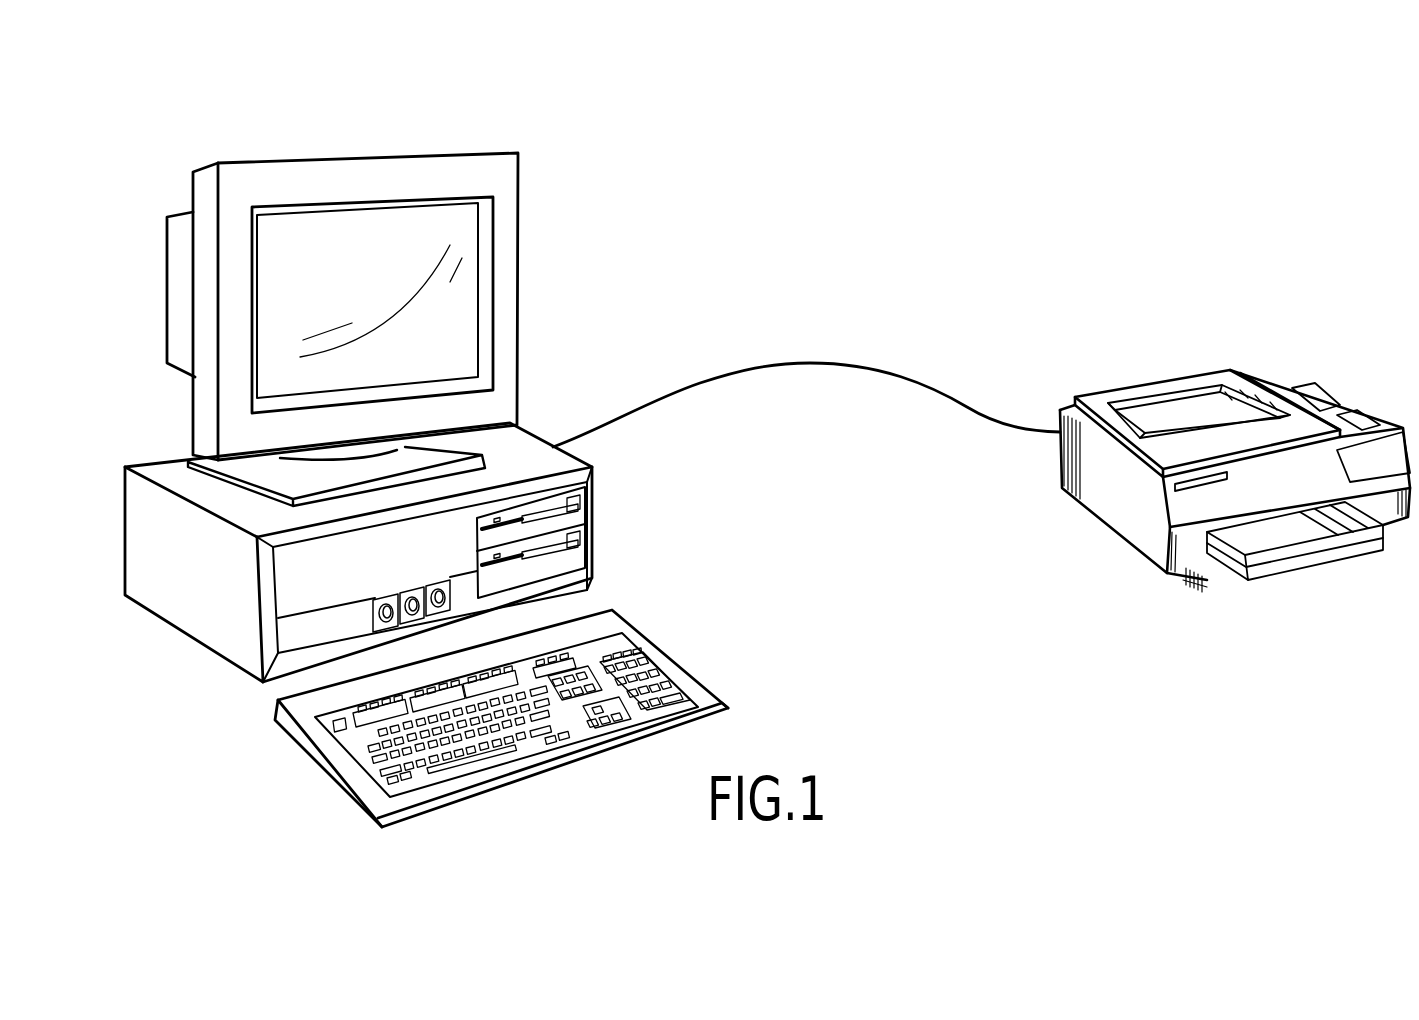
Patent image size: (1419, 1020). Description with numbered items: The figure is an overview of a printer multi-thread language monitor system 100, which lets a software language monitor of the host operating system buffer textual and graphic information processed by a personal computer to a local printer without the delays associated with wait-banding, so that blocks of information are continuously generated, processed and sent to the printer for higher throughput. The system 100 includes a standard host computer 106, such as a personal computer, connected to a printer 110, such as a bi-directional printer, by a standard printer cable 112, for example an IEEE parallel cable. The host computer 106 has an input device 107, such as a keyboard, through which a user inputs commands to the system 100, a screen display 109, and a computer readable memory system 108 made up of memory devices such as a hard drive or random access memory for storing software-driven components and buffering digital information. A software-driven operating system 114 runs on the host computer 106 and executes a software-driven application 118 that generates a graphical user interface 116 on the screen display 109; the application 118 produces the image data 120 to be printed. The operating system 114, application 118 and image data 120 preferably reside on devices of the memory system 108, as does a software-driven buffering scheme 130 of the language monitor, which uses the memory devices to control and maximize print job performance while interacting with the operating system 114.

The printer multi-thread language monitor system 100 is at (973, 219).
The host computer 106 is at (147, 465).
The input device 107 is at (298, 716).
The computer readable memory system 108 is at (604, 566).
The screen display 109 is at (250, 178).
The printer 110 is at (1288, 373).
The printer cable 112 is at (802, 363).
The operating system 114 is at (677, 532).
The graphical user interface 116 is at (345, 222).
The application 118 is at (531, 548).
The image data 120 is at (531, 548).
The buffering scheme 130 is at (582, 546).